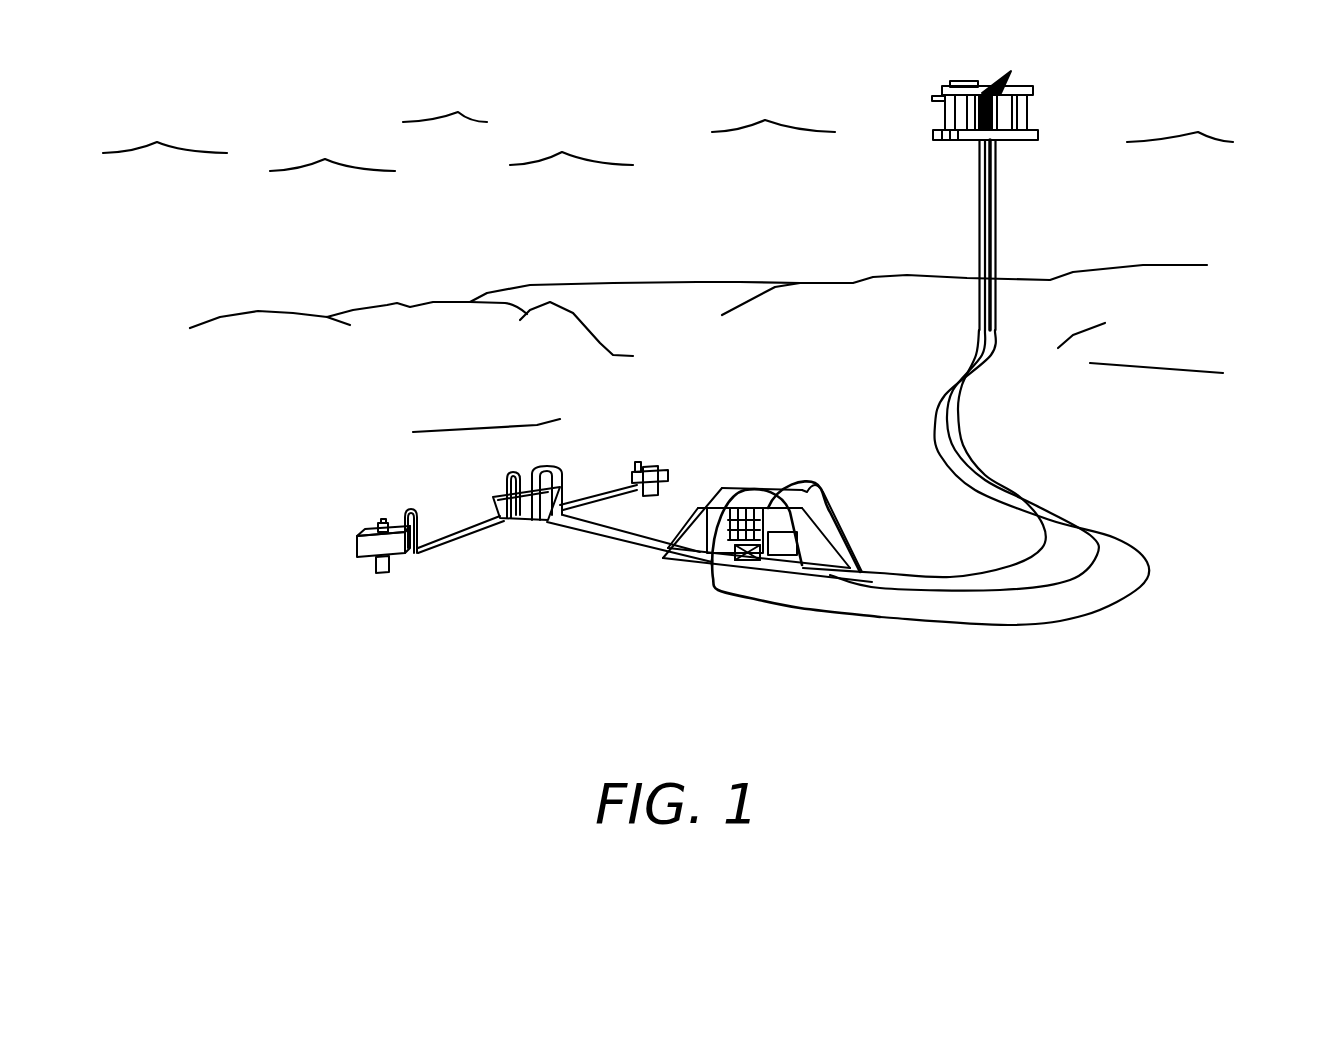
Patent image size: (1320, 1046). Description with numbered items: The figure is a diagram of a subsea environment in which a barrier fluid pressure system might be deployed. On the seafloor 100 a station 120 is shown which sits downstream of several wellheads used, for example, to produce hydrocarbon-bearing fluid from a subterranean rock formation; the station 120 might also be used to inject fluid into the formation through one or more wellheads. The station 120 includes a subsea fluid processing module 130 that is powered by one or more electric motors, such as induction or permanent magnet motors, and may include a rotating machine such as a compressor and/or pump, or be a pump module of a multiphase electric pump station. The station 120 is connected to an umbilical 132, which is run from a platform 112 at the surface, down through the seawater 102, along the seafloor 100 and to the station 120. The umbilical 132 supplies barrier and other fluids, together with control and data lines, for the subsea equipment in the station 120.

The seafloor 100 is at (1118, 457).
The seawater 102 is at (837, 239).
The platform 112 is at (1023, 113).
The station 120 is at (720, 435).
The subsea fluid processing module 130 is at (777, 545).
The umbilical 132 is at (948, 622).